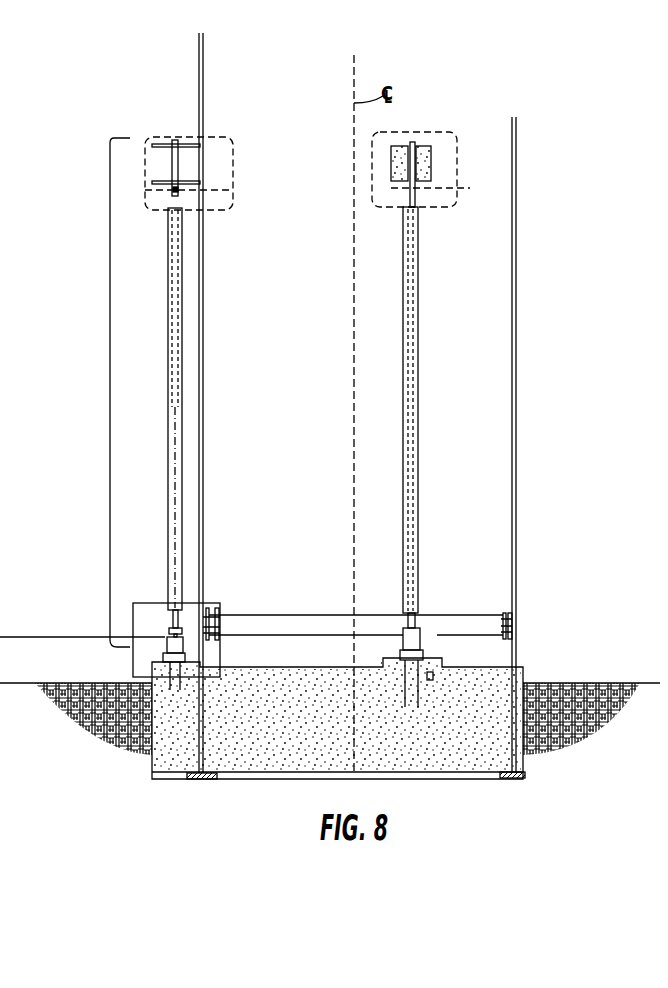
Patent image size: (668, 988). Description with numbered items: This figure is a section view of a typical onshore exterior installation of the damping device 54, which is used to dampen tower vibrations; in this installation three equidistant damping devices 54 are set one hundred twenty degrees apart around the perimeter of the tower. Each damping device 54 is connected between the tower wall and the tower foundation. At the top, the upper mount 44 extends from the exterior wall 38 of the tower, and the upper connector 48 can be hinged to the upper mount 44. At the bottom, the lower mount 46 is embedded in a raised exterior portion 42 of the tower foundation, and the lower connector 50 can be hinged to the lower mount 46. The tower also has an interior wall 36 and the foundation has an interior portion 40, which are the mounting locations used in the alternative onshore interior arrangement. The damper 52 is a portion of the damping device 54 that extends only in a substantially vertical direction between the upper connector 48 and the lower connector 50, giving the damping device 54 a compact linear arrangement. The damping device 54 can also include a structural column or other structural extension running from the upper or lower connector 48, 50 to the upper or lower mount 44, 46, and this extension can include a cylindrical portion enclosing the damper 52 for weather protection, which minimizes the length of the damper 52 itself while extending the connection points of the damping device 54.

The interior wall 36 is at (203, 377).
The exterior wall 38 is at (199, 73).
The interior portion 40 is at (308, 733).
The exterior portion 42 is at (186, 750).
The upper mount 44 is at (176, 172).
The lower mount 46 is at (217, 618).
The upper connector 48 is at (178, 190).
The lower connector 50 is at (180, 630).
The damper 52 is at (175, 318).
The damping device 54 is at (109, 395).